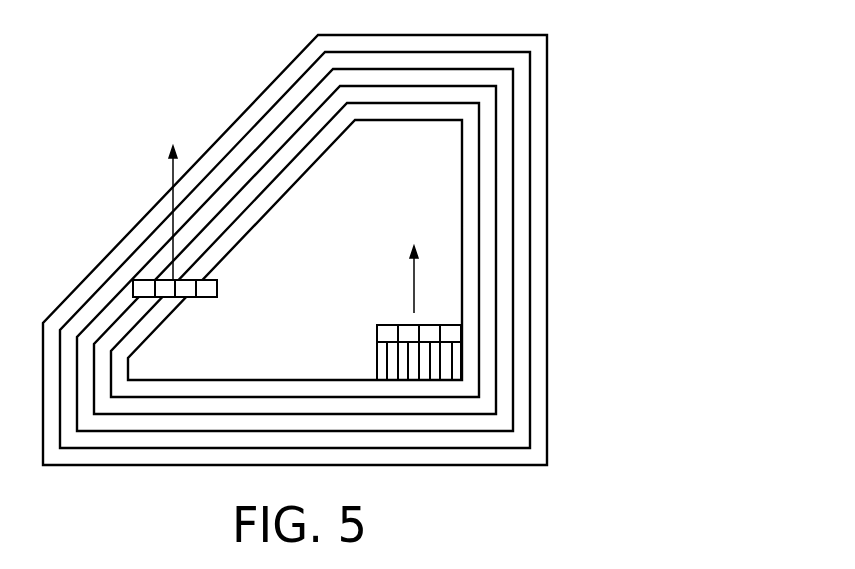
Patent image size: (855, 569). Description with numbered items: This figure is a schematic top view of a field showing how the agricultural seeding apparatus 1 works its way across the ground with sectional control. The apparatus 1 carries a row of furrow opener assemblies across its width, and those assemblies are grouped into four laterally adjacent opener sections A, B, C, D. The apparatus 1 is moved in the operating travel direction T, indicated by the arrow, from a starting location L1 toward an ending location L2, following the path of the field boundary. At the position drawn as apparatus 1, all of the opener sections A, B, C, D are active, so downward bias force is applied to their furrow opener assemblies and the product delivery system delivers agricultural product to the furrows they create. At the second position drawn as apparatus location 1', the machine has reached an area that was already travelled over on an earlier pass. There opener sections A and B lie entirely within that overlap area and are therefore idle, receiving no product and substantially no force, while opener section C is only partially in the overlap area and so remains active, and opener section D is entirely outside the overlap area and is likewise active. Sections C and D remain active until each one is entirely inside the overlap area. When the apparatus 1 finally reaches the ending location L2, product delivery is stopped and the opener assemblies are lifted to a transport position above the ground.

The agricultural seeding apparatus 1 is at (383, 352).
The apparatus location 1' is at (202, 283).
The starting location L1 is at (423, 381).
The ending location L2 is at (433, 121).
The opener section A is at (140, 279).
The opener section B is at (164, 279).
The opener section C is at (178, 298).
The opener section D is at (207, 298).
The operating travel direction T is at (283, 229).